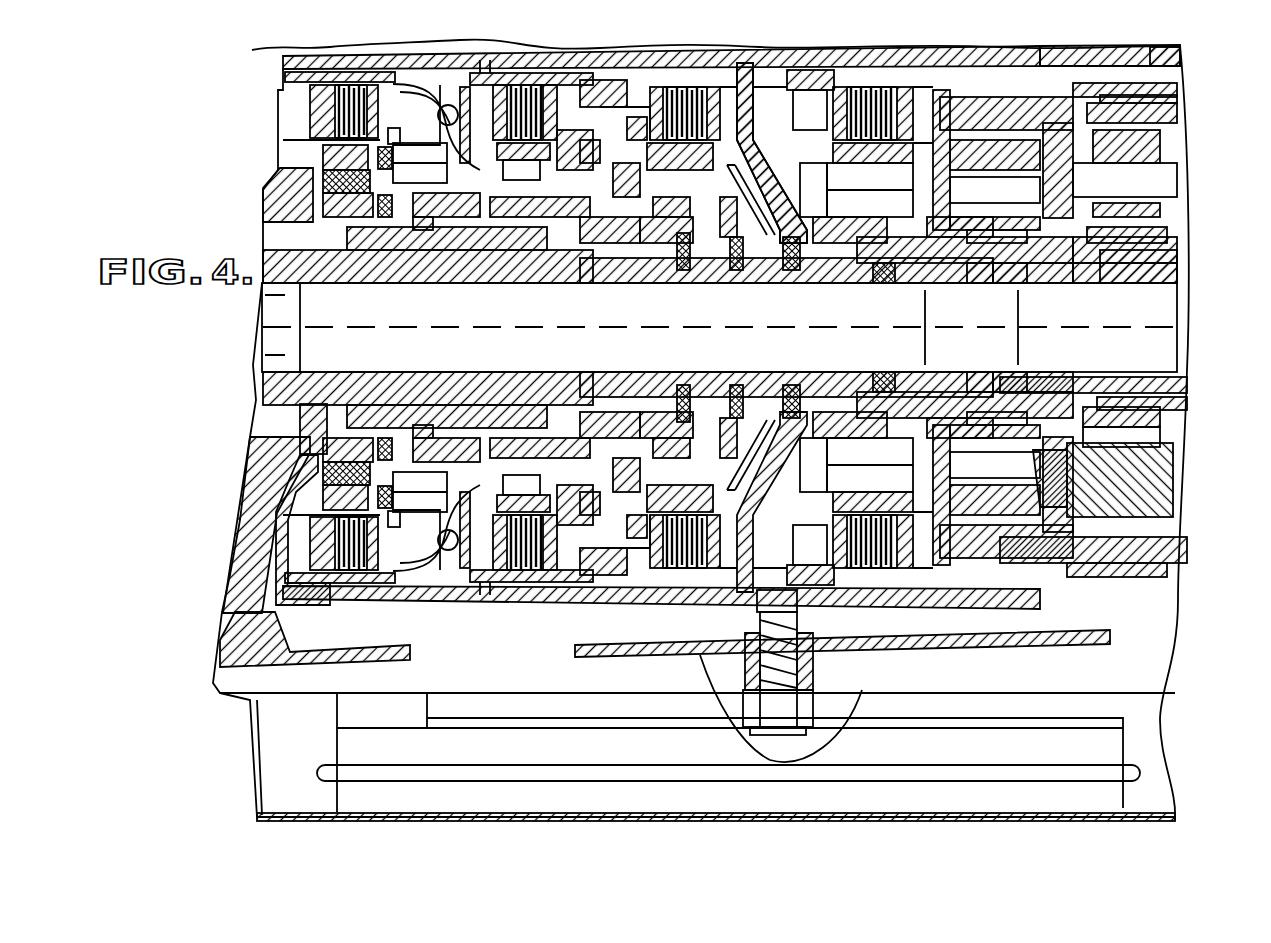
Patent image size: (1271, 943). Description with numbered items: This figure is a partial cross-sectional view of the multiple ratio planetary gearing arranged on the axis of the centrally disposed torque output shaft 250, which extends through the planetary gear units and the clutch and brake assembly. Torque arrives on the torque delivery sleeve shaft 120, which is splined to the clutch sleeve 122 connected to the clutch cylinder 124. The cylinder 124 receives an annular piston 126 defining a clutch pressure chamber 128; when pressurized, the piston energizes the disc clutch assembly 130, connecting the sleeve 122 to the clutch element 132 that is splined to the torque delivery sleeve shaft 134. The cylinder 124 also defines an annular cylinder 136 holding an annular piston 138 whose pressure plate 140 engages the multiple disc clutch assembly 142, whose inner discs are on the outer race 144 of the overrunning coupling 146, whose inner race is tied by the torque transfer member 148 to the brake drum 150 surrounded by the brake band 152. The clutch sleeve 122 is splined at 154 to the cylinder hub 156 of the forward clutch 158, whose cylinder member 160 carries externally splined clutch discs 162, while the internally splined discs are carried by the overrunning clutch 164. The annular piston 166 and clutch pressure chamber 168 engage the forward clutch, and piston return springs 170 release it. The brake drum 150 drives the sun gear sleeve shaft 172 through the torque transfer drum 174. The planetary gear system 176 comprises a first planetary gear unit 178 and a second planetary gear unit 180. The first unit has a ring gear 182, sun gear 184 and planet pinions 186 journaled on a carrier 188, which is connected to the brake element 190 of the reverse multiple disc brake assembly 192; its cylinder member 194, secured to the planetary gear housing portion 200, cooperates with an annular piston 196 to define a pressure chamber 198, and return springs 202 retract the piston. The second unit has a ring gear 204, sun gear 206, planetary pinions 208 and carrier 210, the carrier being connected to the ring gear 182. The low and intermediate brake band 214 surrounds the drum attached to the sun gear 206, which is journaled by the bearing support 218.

The torque delivery sleeve shaft 120 is at (507, 285).
The clutch sleeve 122 is at (600, 243).
The clutch cylinder 124 is at (695, 56).
The annular piston 126 is at (712, 118).
The clutch pressure chamber 128 is at (660, 243).
The disc clutch assembly 130 is at (760, 72).
The clutch element 132 is at (768, 262).
The torque delivery sleeve shaft 134 is at (886, 283).
The annular cylinder 136 is at (765, 190).
The annular piston 138 is at (683, 270).
The pressure plate 140 is at (612, 175).
The multiple disc clutch assembly 142 is at (655, 78).
The outer race 144 is at (487, 233).
The overrunning coupling 146 is at (527, 217).
The torque transfer member 148 is at (515, 120).
The brake drum 150 is at (310, 78).
The brake band 152 is at (307, 57).
The spline 154 is at (382, 217).
The cylinder hub 156 is at (385, 170).
The forward clutch 158 is at (312, 112).
The cylinder member 160 is at (395, 86).
The clutch discs 162 is at (322, 150).
The overrunning clutch 164 is at (340, 163).
The annular piston 166 is at (420, 163).
The clutch pressure chamber 168 is at (458, 217).
The piston return springs 170 is at (425, 155).
The sun gear sleeve shaft 172 is at (795, 270).
The torque transfer drum 174 is at (757, 52).
The planetary gear system 176 is at (1057, 90).
The first planetary gear unit 178 is at (1000, 123).
The second planetary gear unit 180 is at (1175, 96).
The ring gear 182 is at (963, 127).
The sun gear 184 is at (1005, 283).
The planet pinions 186 is at (987, 243).
The carrier 188 is at (950, 185).
The brake element 190 is at (875, 158).
The reverse multiple disc brake assembly 192 is at (845, 120).
The cylinder member 194 is at (795, 160).
The annular piston 196 is at (814, 111).
The pressure chamber 198 is at (815, 200).
The planetary gear housing portion 200 is at (1175, 63).
The return springs 202 is at (845, 243).
The ring gear 204 is at (1175, 118).
The sun gear 206 is at (1160, 225).
The planetary pinions 208 is at (1160, 146).
The carrier 210 is at (1165, 180).
The low and intermediate brake band 214 is at (1100, 90).
The bearing support 218 is at (1175, 260).
The torque output shaft 250 is at (724, 340).